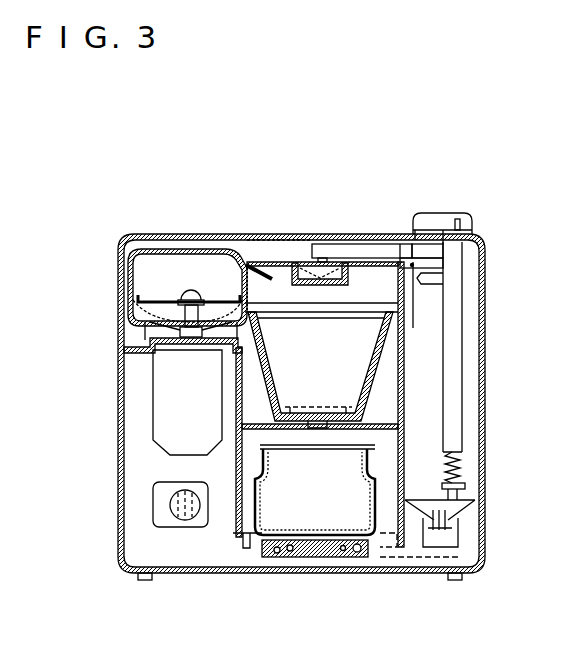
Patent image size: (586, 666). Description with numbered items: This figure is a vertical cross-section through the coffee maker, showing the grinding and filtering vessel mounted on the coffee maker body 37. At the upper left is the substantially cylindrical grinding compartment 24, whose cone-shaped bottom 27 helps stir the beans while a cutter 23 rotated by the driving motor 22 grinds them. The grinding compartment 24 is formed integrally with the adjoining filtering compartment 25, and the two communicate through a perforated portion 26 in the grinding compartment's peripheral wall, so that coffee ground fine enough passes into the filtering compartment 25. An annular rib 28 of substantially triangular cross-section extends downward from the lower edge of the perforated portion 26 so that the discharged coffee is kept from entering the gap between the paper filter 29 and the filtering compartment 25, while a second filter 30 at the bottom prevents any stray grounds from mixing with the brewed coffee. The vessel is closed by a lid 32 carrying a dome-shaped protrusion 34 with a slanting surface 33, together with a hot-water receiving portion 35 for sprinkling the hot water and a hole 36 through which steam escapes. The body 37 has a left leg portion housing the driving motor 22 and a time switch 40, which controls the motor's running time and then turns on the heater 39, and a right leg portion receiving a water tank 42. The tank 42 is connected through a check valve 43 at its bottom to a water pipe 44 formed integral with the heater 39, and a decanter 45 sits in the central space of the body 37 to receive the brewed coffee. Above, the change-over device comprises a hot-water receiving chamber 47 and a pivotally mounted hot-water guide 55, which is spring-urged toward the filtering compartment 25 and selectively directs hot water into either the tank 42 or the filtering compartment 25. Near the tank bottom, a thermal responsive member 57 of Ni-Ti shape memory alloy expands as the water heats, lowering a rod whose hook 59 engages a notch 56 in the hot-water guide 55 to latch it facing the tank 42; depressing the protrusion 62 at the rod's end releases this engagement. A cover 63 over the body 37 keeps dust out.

The driving motor 22 is at (153, 390).
The cutter 23 is at (222, 300).
The grinding compartment 24 is at (172, 273).
The filtering compartment 25 is at (342, 340).
The perforated portion 26 is at (251, 264).
The bottom 27 is at (122, 247).
The annular rib 28 is at (256, 314).
The paper filter 29 is at (272, 372).
The second filter 30 is at (311, 410).
The lid 32 is at (288, 261).
The slanting surface 33 is at (234, 255).
The dome-shaped protrusion 34 is at (162, 318).
The hot-water receiving portion 35 is at (328, 270).
The hole 36 is at (283, 250).
The coffee maker body 37 is at (121, 438).
The heater 39 is at (343, 553).
The time switch 40 is at (155, 512).
The tank 42 is at (428, 433).
The check valve 43 is at (440, 530).
The water pipe 44 is at (359, 552).
The decanter 45 is at (252, 505).
The hot-water receiving chamber 47 is at (440, 212).
The hot-water guide 55 is at (398, 242).
The notch 56 is at (418, 307).
The thermal responsive member 57 is at (462, 470).
The hook 59 is at (433, 281).
The protrusion 62 is at (461, 216).
The cover 63 is at (190, 236).